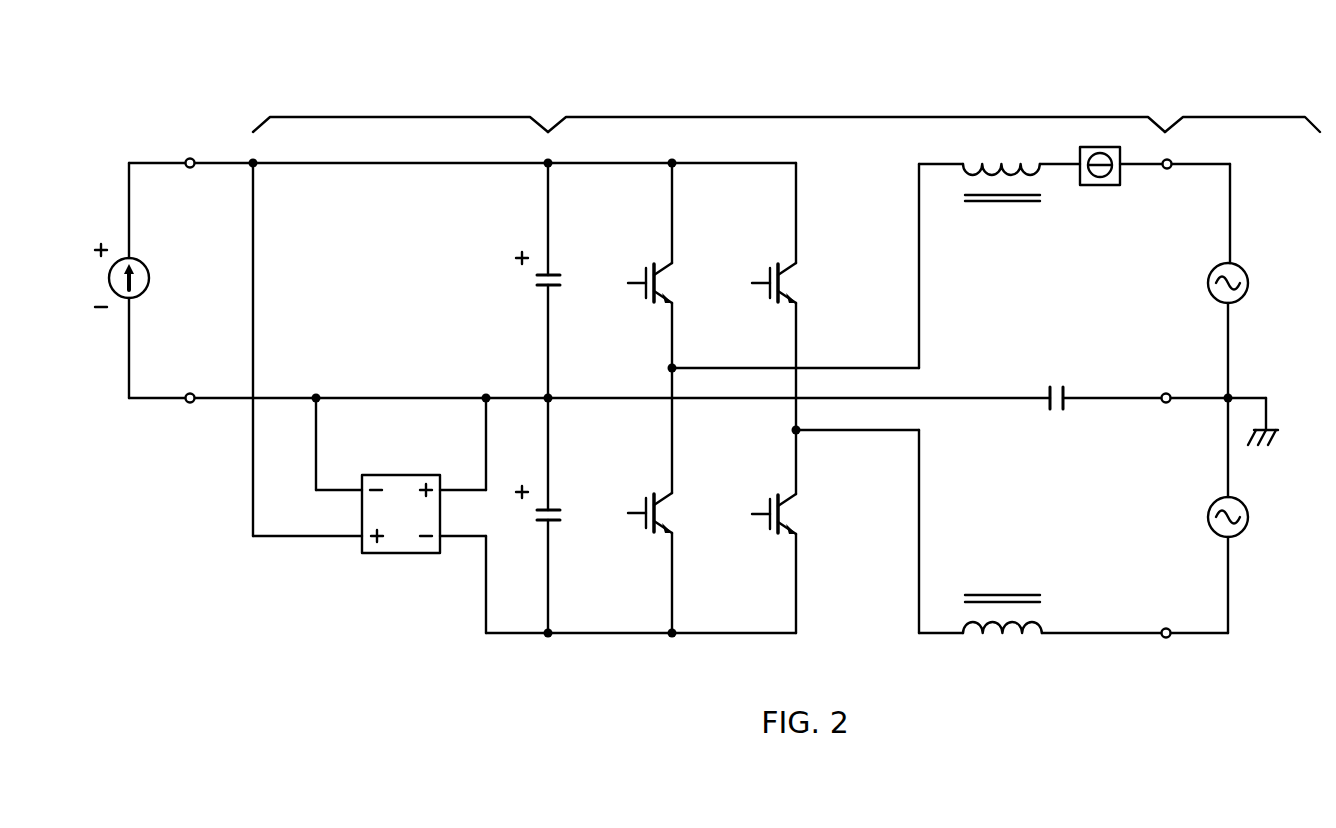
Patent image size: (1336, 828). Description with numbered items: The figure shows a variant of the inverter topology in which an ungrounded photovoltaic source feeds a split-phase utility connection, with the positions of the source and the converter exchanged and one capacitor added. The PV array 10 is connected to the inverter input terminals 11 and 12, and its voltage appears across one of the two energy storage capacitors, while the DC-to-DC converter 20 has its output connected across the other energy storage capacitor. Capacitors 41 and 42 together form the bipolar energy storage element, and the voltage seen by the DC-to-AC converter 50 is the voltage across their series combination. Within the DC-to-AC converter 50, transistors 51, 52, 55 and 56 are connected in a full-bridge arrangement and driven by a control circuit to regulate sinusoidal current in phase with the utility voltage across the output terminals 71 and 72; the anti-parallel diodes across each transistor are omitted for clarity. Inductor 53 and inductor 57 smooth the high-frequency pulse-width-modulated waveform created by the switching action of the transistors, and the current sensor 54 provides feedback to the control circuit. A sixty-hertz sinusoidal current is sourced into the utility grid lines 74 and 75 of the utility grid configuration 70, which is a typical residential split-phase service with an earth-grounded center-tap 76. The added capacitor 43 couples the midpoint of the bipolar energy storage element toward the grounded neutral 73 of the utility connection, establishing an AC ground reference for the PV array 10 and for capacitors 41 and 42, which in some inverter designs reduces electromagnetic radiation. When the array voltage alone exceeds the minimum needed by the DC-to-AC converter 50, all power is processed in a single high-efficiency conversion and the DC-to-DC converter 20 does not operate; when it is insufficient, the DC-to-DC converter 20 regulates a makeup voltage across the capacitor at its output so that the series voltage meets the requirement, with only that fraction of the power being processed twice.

The PV array 10 is at (140, 275).
The inverter input terminal 11 is at (190, 180).
The inverter input terminal 12 is at (190, 381).
The DC-to-DC converter 20 is at (400, 91).
The energy storage capacitor 41 is at (555, 280).
The energy storage capacitor 42 is at (557, 515).
The capacitor 43 is at (1058, 381).
The DC-to-AC converter 50 is at (856, 91).
The transistor 51 is at (668, 328).
The transistor 52 is at (669, 563).
The inductor 53 is at (1001, 200).
The current sensor 54 is at (1100, 184).
The transistor 55 is at (793, 328).
The transistor 56 is at (793, 563).
The inductor 57 is at (1002, 598).
The utility grid configuration 70 is at (1242, 91).
The output terminal 71 is at (1168, 182).
The output terminal 72 is at (1168, 617).
The neutral terminal 73 is at (1170, 382).
The utility grid line 74 is at (1250, 283).
The utility grid line 75 is at (1250, 517).
The earth-grounded center-tap 76 is at (1274, 424).